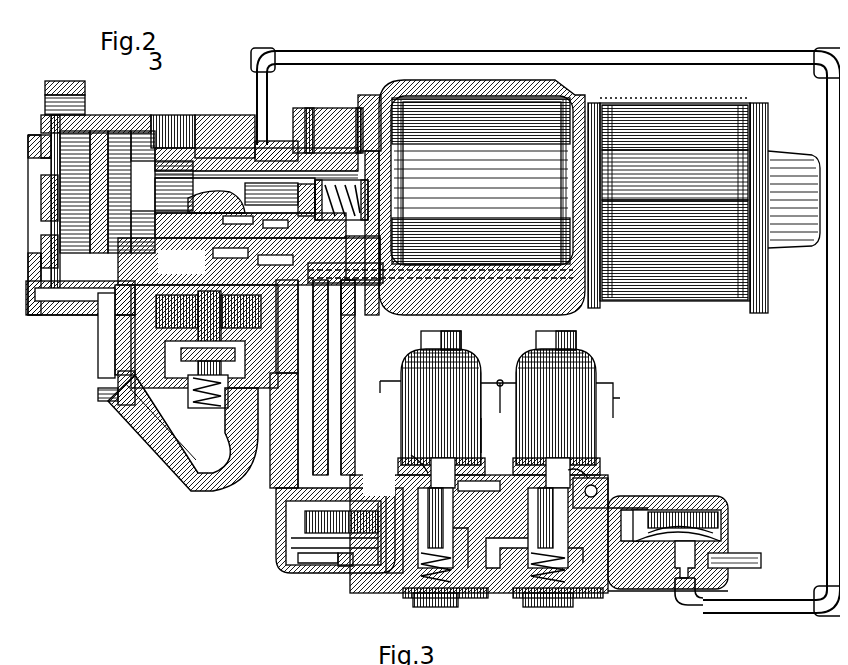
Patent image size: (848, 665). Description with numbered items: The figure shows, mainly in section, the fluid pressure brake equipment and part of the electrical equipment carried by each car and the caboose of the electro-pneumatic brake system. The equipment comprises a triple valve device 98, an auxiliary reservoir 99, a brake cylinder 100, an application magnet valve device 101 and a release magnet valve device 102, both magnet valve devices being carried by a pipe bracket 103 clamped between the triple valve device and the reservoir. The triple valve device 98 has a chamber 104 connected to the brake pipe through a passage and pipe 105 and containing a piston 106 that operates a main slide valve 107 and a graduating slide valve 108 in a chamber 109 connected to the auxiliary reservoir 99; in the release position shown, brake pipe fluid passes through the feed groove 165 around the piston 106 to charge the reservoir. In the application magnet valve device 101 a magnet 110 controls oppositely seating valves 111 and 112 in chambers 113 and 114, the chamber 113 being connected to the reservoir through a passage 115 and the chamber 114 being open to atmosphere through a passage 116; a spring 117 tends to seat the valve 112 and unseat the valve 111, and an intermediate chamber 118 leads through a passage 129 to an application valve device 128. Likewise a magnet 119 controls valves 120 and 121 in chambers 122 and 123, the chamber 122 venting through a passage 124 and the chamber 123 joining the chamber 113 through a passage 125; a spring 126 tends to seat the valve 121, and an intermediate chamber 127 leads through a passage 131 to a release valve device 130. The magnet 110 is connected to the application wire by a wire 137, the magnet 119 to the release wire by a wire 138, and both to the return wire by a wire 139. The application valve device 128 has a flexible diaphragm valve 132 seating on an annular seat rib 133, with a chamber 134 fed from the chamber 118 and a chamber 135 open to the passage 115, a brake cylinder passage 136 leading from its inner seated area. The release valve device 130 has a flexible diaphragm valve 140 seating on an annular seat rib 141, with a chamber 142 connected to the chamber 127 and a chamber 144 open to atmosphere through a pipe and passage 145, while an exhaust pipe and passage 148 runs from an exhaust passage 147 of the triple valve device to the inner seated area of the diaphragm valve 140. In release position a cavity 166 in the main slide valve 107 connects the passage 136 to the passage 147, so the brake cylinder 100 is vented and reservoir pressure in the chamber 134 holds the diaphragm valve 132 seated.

The triple valve device 98 is at (145, 112).
The auxiliary reservoir 99 is at (482, 197).
The brake cylinder 100 is at (670, 273).
The application magnet valve device 101 is at (412, 473).
The release magnet valve device 102 is at (598, 470).
The pipe bracket 103 is at (338, 383).
The chamber 104 is at (64, 152).
The passage and pipe 105 is at (123, 303).
The piston 106 is at (100, 130).
The main slide valve 107 is at (160, 205).
The graduating slide valve 108 is at (182, 200).
The chamber 109 is at (298, 187).
The magnet 110 is at (412, 412).
The valve 111 is at (476, 438).
The valve 112 is at (400, 590).
The chamber 113 is at (403, 448).
The chamber 114 is at (450, 593).
The passage 115 is at (324, 347).
The passage 116 is at (456, 572).
The spring 117 is at (442, 527).
The chamber 118 is at (446, 512).
The magnet 119 is at (568, 405).
The valve 120 is at (587, 470).
The valve 121 is at (560, 548).
The chamber 122 is at (553, 470).
The chamber 123 is at (522, 585).
The passage 124 is at (590, 490).
The passage 125 is at (521, 497).
The spring 126 is at (553, 600).
The chamber 127 is at (538, 519).
The application valve device 128 is at (310, 563).
The passage 129 is at (386, 512).
The release valve device 130 is at (656, 588).
The passage 131 is at (640, 500).
The flexible diaphragm valve 132 is at (300, 538).
The annular seat rib 133 is at (328, 565).
The chamber 134 is at (297, 511).
The chamber 135 is at (373, 568).
The brake cylinder passage 136 is at (398, 262).
The wire 137 is at (373, 396).
The wire 138 is at (631, 398).
The wire 139 is at (490, 406).
The flexible diaphragm valve 140 is at (712, 502).
The annular seat rib 141 is at (630, 583).
The chamber 142 is at (712, 520).
The chamber 144 is at (752, 551).
The pipe and passage 145 is at (712, 572).
The exhaust passage 147 is at (215, 236).
The exhaust pipe and passage 148 is at (442, 53).
The feed groove 165 is at (60, 205).
The cavity 166 is at (272, 177).